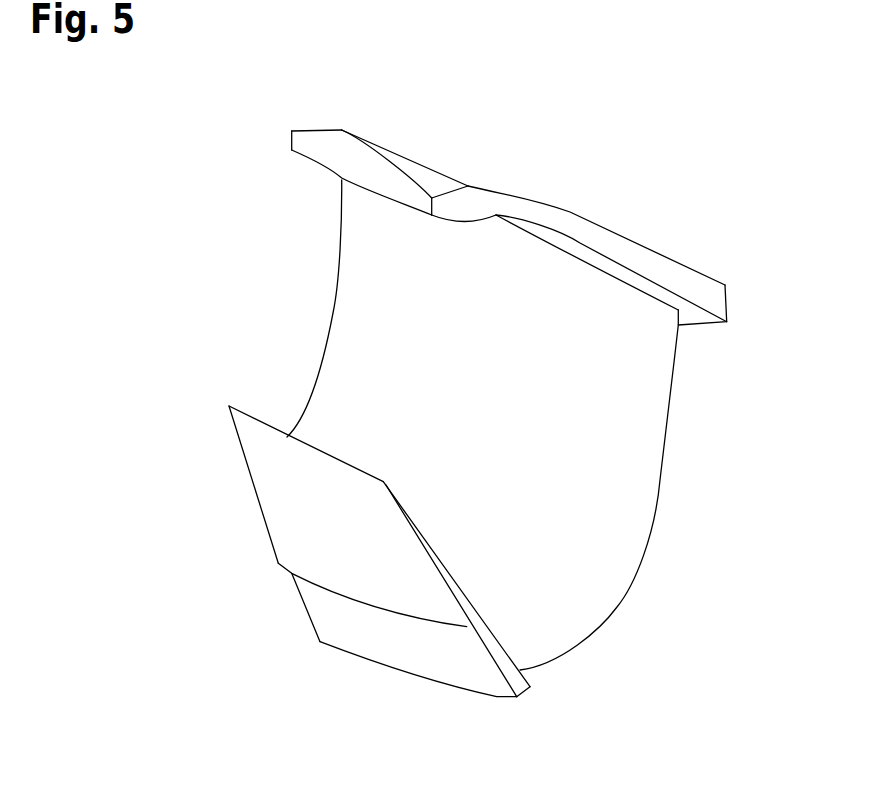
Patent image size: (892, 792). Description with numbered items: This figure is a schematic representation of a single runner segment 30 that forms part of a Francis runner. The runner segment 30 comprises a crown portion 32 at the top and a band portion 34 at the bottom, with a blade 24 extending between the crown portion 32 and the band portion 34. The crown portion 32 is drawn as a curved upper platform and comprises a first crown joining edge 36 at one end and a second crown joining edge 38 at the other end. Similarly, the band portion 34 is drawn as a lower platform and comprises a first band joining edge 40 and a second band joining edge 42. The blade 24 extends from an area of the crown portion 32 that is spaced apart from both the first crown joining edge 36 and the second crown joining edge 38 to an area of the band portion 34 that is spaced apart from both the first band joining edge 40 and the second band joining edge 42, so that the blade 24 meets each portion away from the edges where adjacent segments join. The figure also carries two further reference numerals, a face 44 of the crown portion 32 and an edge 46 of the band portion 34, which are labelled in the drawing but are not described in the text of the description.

The blade 24 is at (598, 468).
The runner segment 30 is at (247, 251).
The crown portion 32 is at (405, 157).
The band portion 34 is at (307, 520).
The first crown joining edge 36 is at (300, 118).
The second crown joining edge 38 is at (703, 291).
The first band joining edge 40 is at (245, 468).
The second band joining edge 42 is at (447, 577).
The face of first platform 44 is at (578, 249).
The edge of second platform 46 is at (507, 650).